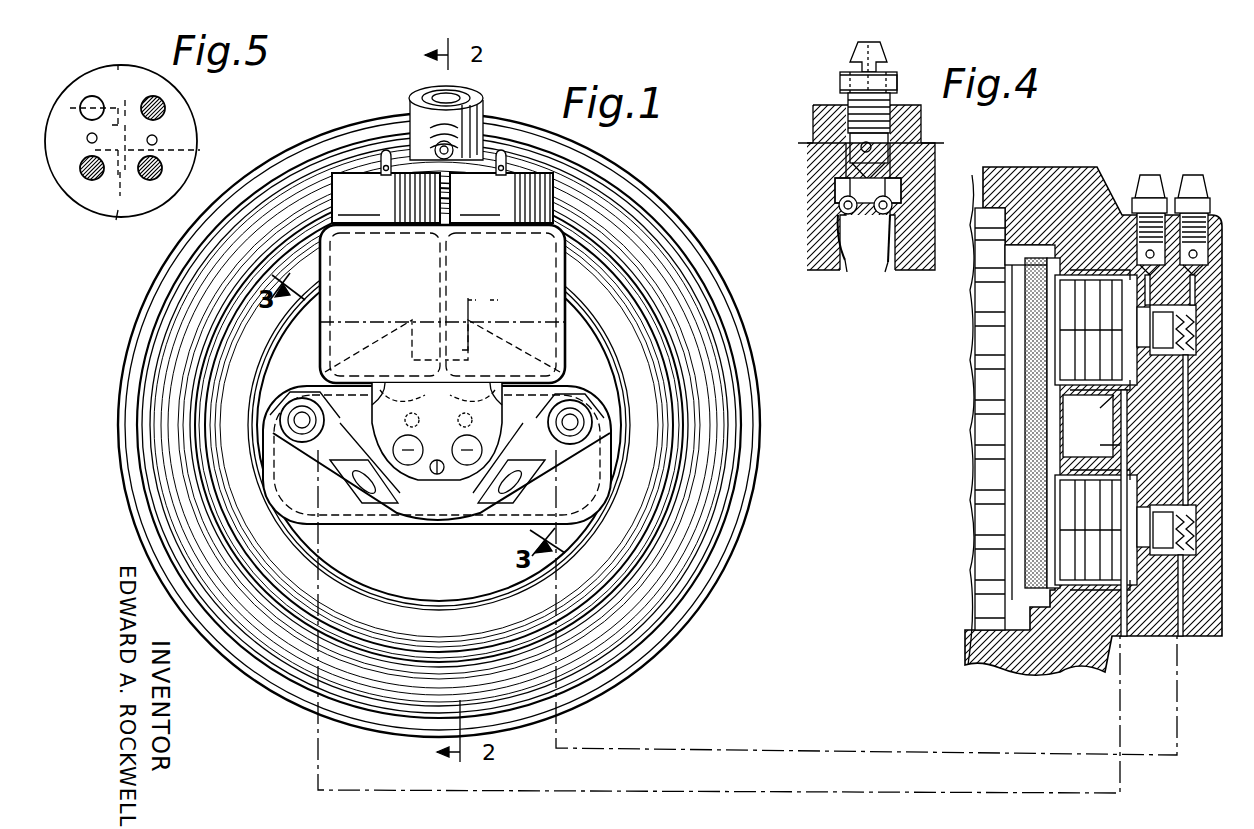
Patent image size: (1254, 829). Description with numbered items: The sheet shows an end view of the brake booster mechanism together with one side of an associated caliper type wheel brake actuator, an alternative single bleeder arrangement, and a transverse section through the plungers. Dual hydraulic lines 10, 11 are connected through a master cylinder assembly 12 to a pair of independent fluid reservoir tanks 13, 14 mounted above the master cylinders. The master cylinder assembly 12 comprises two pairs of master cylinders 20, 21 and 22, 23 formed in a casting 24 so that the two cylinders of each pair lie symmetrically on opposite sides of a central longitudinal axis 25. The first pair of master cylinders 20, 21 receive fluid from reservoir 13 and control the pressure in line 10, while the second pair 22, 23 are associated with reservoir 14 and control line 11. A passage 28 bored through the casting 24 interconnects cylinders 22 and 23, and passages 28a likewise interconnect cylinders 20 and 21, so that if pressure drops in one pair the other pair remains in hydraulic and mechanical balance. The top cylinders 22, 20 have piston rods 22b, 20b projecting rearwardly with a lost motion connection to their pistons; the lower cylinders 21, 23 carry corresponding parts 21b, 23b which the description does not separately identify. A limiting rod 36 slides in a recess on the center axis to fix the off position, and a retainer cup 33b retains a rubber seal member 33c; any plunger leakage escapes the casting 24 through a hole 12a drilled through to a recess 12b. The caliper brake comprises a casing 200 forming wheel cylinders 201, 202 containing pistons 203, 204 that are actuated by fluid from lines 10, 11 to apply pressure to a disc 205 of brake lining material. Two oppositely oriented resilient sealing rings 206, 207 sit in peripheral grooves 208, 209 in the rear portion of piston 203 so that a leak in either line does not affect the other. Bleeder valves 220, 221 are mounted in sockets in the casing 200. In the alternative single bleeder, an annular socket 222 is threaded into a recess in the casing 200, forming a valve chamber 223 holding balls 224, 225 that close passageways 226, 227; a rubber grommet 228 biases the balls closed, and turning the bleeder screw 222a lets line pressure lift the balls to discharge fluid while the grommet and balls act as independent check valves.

In FIG. 1, the hydraulic line 10 is at (318, 782).
In FIG. 1, the hydraulic line 11 is at (556, 745).
In FIG. 1, the master cylinder assembly 12 is at (585, 370).
In FIG. 5, the hole 12a is at (116, 220).
In FIG. 1, the hole 12a is at (437, 477).
In FIG. 5, the recess 12b is at (190, 151).
In FIG. 1, the fluid reservoir tank 13 is at (575, 268).
In FIG. 1, the fluid reservoir tank 14 is at (325, 305).
In FIG. 1, the master cylinder 20 is at (480, 335).
In FIG. 5, the piston rod 20b is at (88, 98).
In FIG. 1, the master cylinder 21 is at (400, 483).
In FIG. 5, the mounting hole 21b is at (150, 180).
In FIG. 1, the master cylinder 22 is at (410, 322).
In FIG. 5, the piston rod 22b is at (168, 107).
In FIG. 1, the master cylinder 23 is at (470, 483).
In FIG. 5, the mounting hole 23b is at (92, 182).
In FIG. 1, the casting 24 is at (338, 430).
In FIG. 1, the central longitudinal axis 25 is at (497, 402).
In FIG. 1, the passage 28 is at (500, 425).
In FIG. 1, the passage 28a is at (375, 403).
In FIG. 5, the retainer cup 33b is at (118, 66).
In FIG. 5, the rubber seal member 33c is at (158, 140).
In FIG. 5, the limiting rod 36 is at (118, 218).
In FIG. 4, the casing 200 is at (925, 150).
In FIG. 4, the wheel cylinder 201 is at (1080, 205).
In FIG. 4, the wheel cylinder 202 is at (1062, 485).
In FIG. 4, the piston 203 is at (1110, 215).
In FIG. 4, the piston 204 is at (1125, 510).
In FIG. 4, the disc 205 is at (1050, 200).
In FIG. 4, the resilient sealing ring 206 is at (1088, 426).
In FIG. 4, the resilient sealing ring 207 is at (1094, 425).
In FIG. 4, the peripheral groove 208 is at (1072, 318).
In FIG. 4, the peripheral groove 209 is at (1140, 345).
In FIG. 4, the bleeder valve 220 is at (1148, 175).
In FIG. 4, the bleeder valve 221 is at (1196, 175).
In FIG. 4, the annular socket 222 is at (822, 135).
In FIG. 4, the bleeder screw 222a is at (898, 80).
In FIG. 4, the valve chamber 223 is at (895, 205).
In FIG. 4, the ball 224 is at (838, 238).
In FIG. 4, the ball 225 is at (893, 245).
In FIG. 4, the passageway 226 is at (842, 262).
In FIG. 4, the passageway 227 is at (880, 268).
In FIG. 4, the rubber grommet 228 is at (905, 185).